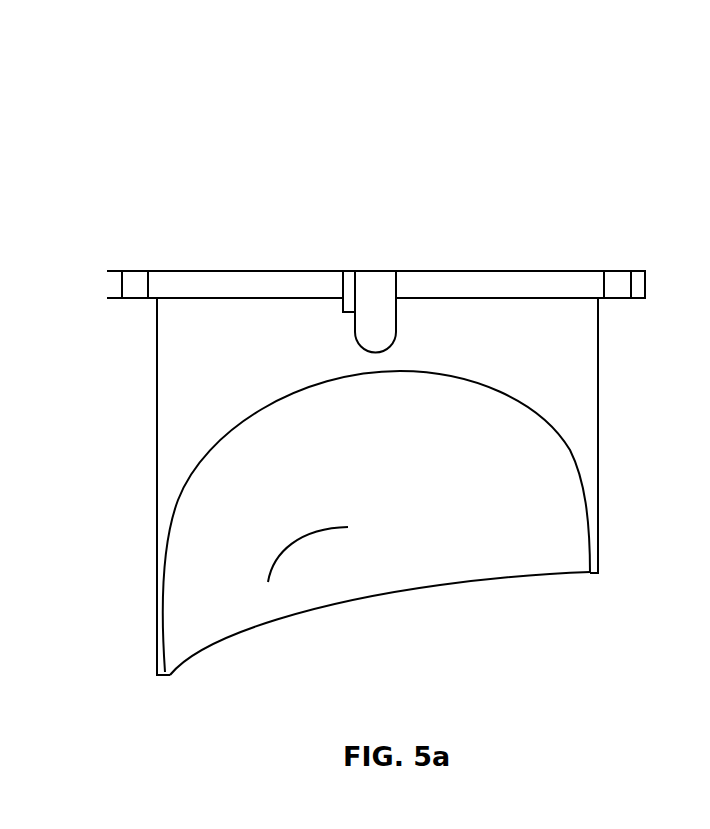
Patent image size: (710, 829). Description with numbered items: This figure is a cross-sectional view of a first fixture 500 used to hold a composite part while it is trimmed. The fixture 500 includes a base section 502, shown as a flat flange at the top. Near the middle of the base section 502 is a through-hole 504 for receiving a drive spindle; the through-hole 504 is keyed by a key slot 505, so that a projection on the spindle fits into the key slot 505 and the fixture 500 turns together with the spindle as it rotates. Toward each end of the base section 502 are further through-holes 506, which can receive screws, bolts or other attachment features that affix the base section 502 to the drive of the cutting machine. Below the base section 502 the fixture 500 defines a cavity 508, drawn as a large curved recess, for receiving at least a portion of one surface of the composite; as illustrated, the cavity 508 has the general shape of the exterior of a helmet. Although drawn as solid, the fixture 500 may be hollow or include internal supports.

The fixture 500 is at (317, 98).
The base section 502 is at (484, 271).
The through-hole 504 is at (377, 271).
The key slot 505 is at (345, 271).
The through-holes 506 is at (135, 271).
The cavity 508 is at (376, 523).